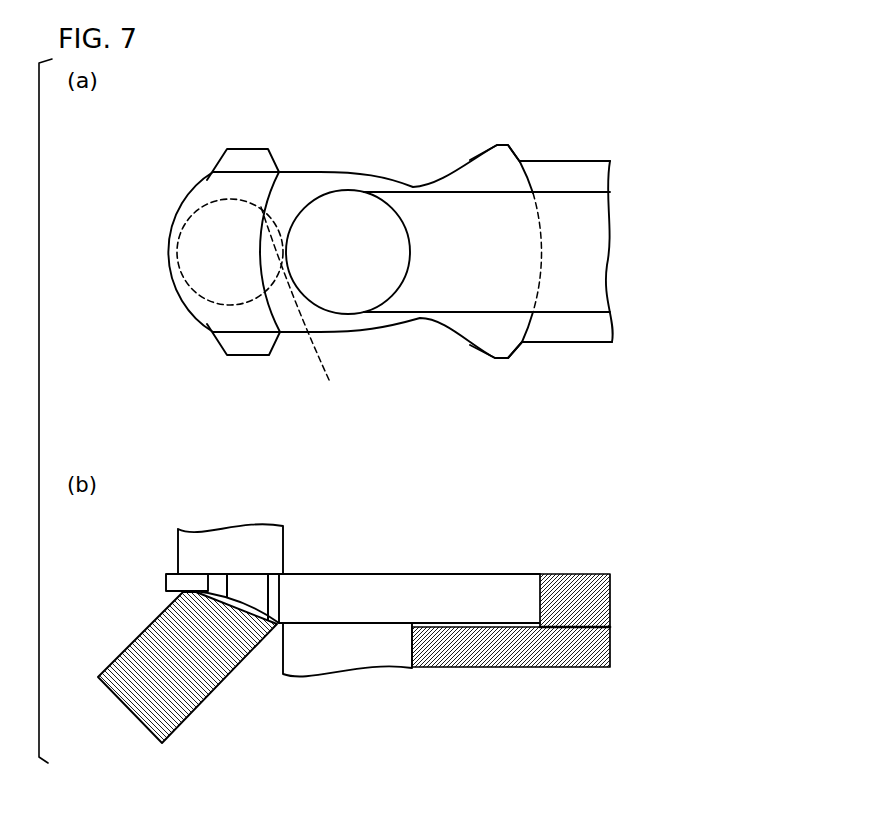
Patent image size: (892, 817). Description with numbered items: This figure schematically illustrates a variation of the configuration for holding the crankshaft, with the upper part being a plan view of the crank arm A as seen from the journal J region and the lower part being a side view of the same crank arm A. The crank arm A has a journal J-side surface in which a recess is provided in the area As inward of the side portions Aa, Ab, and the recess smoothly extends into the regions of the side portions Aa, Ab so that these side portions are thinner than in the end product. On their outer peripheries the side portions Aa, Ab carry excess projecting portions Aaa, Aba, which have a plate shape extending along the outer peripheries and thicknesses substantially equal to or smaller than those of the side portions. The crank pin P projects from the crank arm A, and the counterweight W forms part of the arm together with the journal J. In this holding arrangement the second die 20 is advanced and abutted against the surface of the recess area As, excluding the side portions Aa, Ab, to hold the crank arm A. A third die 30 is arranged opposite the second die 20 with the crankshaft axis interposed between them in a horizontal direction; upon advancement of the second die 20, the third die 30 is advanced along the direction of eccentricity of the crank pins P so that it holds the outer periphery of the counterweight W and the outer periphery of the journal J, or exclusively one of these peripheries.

The crank arm A is at (310, 170).
The side portion Aa is at (257, 177).
The side portion Ab is at (258, 328).
The excess projecting portion Aaa is at (247, 155).
The excess projecting portion Aba is at (247, 352).
The recess area As is at (232, 280).
The crank pin P is at (283, 542).
The journal J is at (363, 315).
The counterweight W is at (492, 150).
The third die 30 is at (577, 170).
The second die 20 is at (210, 697).